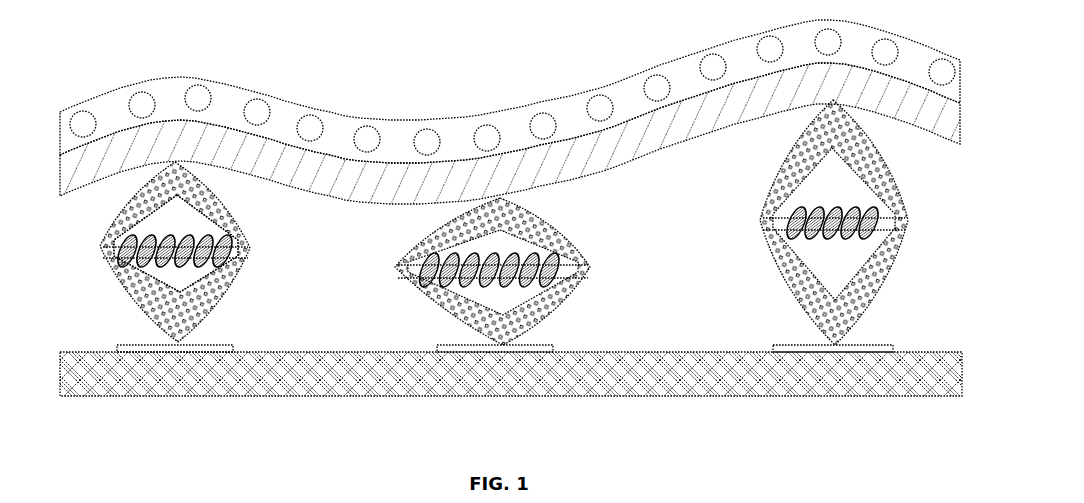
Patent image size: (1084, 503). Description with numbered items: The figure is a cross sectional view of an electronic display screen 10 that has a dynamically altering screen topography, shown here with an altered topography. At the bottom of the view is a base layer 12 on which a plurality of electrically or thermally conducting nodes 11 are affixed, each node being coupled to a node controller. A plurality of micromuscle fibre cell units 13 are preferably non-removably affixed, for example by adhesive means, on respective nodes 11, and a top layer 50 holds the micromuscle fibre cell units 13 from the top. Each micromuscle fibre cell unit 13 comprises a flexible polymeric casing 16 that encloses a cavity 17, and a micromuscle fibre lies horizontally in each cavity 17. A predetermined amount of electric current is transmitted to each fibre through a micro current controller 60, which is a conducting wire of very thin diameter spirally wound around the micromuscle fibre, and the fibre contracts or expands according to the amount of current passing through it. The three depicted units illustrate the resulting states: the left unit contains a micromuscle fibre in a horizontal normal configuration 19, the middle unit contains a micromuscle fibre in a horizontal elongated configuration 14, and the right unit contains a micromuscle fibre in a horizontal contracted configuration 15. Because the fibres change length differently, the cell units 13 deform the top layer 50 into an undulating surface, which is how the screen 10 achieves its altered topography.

The electronic display screen 10 is at (510, 108).
The top layer 50 is at (233, 143).
The electrically or thermally conducting nodes 11 is at (442, 349).
The base layer 12 is at (151, 398).
The micromuscle fibre cell units 13 is at (790, 295).
The micromuscle fibre in horizontal elongated configuration 14 is at (554, 256).
The micromuscle fibre in horizontal contracted configuration 15 is at (862, 239).
The flexible polymeric casing 16 is at (145, 194).
The cavity 17 is at (176, 288).
The micromuscle fibre in horizontal normal configuration 19 is at (224, 254).
The micro current controller 60 is at (126, 249).